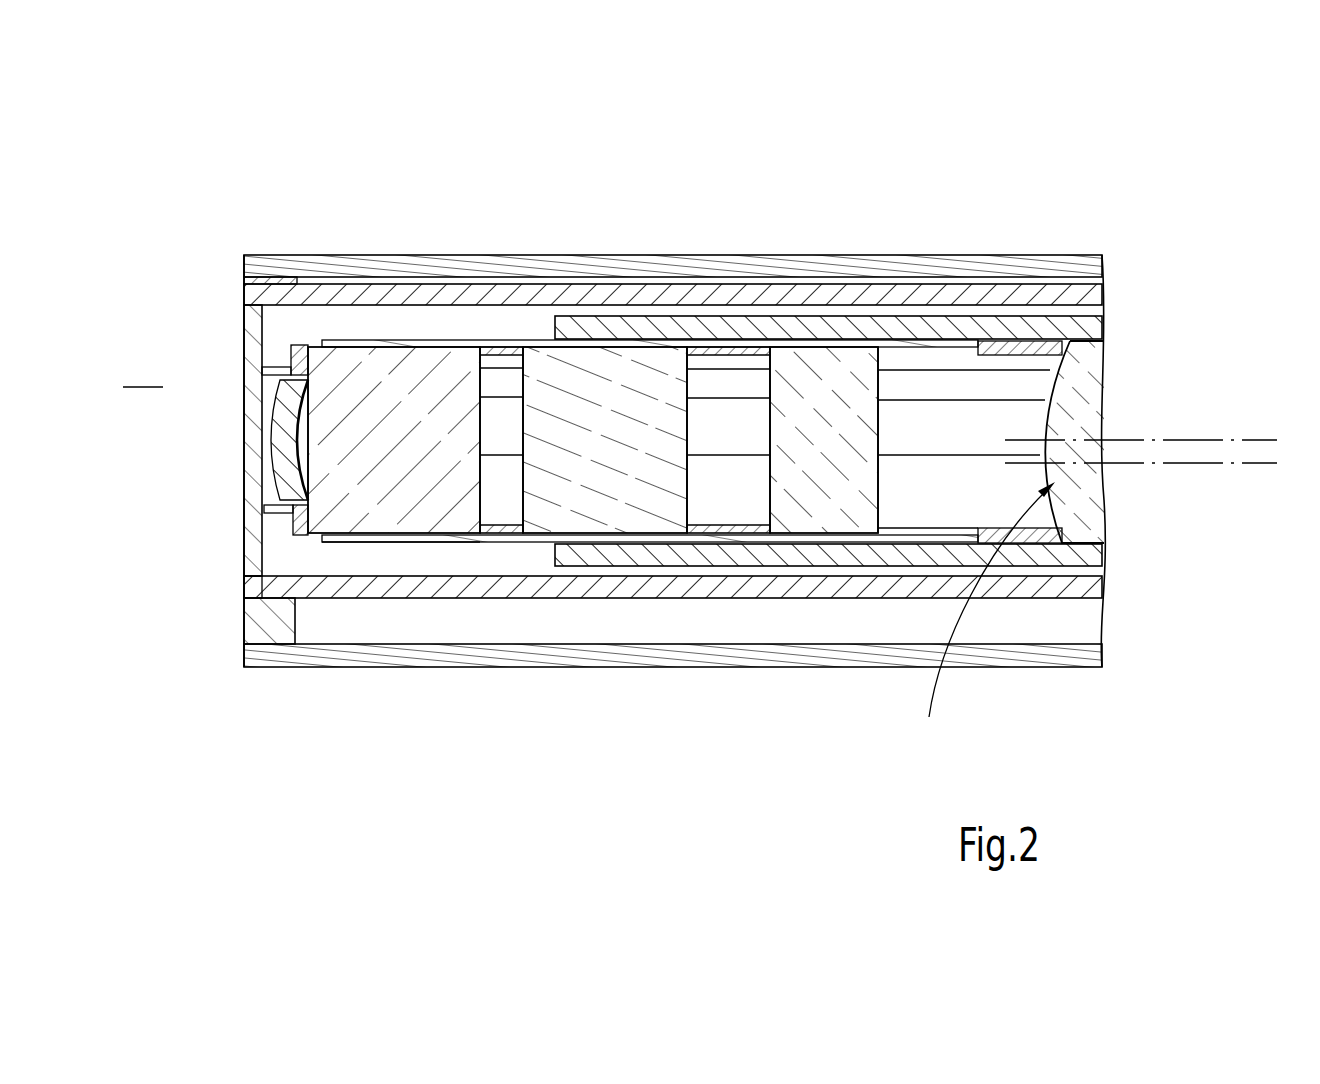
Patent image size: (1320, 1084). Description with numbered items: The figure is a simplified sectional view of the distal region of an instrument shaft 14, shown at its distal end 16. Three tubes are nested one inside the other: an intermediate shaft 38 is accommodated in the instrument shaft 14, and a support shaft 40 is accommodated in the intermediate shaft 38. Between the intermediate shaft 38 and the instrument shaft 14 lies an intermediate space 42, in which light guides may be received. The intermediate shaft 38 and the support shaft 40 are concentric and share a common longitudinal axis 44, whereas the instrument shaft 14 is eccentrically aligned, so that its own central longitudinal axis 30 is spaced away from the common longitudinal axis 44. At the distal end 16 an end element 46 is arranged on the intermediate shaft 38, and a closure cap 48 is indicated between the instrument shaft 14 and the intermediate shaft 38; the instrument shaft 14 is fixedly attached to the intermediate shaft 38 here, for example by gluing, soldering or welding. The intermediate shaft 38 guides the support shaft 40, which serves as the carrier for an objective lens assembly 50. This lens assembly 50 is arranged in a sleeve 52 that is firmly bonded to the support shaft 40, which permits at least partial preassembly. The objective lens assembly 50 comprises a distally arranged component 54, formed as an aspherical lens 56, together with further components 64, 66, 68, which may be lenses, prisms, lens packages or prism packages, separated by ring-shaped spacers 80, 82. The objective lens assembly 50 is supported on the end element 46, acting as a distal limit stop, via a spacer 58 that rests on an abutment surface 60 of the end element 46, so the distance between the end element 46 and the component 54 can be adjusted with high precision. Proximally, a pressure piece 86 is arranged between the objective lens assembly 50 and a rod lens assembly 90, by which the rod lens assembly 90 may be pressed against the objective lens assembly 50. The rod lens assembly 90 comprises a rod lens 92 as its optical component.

The instrument shaft 14 is at (442, 659).
The distal end 16 is at (143, 372).
The central longitudinal axis 30 is at (1210, 463).
The intermediate shaft 38 is at (506, 598).
The support shaft 40 is at (708, 553).
The intermediate space 42 is at (583, 623).
The common longitudinal axis 44 is at (1183, 440).
The end element 46 is at (245, 512).
The closure cap 48 is at (270, 623).
The objective lens assembly 50 is at (430, 554).
The sleeve 52 is at (382, 542).
The distally arranged component 54 is at (290, 393).
The aspherical lens 56 is at (267, 407).
The spacer 58 is at (247, 583).
The abutment surface 60 is at (267, 492).
The further component 64 is at (420, 378).
The further component 66 is at (612, 397).
The further component 68 is at (843, 375).
The spacer 80 is at (500, 347).
The spacer 82 is at (728, 352).
The pressure piece 86 is at (1025, 350).
The rod lens assembly 90 is at (990, 612).
The rod lens 92 is at (1080, 513).